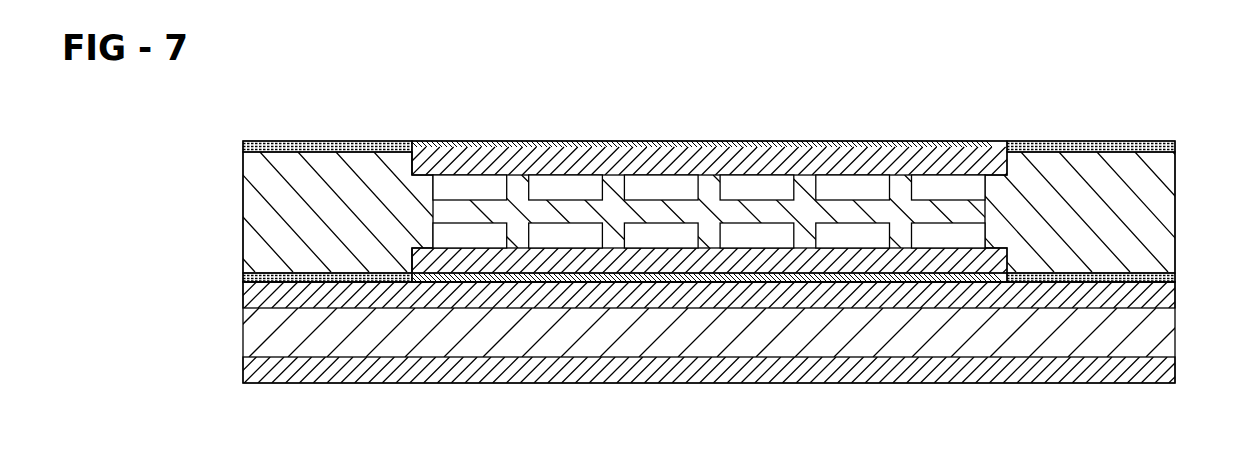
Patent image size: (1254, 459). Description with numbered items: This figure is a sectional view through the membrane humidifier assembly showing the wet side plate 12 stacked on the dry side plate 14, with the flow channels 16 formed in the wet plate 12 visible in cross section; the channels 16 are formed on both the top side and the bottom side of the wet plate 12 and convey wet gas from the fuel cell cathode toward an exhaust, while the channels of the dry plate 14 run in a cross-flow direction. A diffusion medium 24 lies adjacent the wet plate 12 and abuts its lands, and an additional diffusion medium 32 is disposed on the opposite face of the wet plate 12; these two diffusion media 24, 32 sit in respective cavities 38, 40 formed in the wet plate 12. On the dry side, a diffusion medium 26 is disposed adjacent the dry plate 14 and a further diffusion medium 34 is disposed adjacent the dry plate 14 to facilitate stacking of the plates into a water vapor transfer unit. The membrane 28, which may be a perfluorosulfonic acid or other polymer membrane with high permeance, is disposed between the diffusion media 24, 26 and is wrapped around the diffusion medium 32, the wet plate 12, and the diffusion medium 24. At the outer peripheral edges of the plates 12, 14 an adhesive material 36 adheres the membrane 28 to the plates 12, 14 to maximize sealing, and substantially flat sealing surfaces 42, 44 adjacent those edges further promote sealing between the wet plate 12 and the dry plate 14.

The wet plate 12 is at (1182, 198).
The dry plate 14 is at (1182, 310).
The flow channels 16 is at (950, 235).
The diffusion medium 24 is at (480, 262).
The diffusion medium 26 is at (705, 295).
The membrane 28 is at (543, 268).
The additional diffusion medium 32 is at (640, 160).
The diffusion medium 34 is at (858, 367).
The adhesive material 36 is at (305, 272).
The cavity 38 is at (414, 256).
The cavity 40 is at (416, 158).
The sealing surface 42 is at (278, 142).
The sealing surface 44 is at (274, 275).